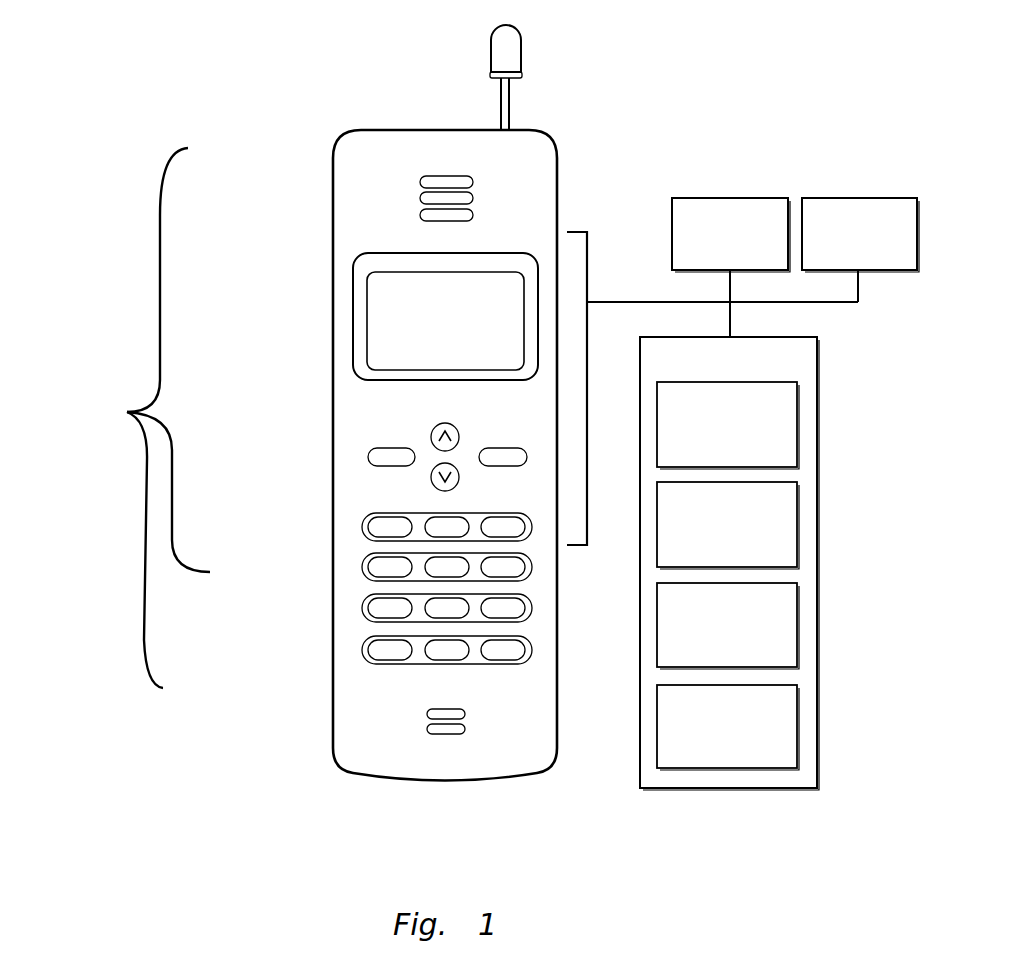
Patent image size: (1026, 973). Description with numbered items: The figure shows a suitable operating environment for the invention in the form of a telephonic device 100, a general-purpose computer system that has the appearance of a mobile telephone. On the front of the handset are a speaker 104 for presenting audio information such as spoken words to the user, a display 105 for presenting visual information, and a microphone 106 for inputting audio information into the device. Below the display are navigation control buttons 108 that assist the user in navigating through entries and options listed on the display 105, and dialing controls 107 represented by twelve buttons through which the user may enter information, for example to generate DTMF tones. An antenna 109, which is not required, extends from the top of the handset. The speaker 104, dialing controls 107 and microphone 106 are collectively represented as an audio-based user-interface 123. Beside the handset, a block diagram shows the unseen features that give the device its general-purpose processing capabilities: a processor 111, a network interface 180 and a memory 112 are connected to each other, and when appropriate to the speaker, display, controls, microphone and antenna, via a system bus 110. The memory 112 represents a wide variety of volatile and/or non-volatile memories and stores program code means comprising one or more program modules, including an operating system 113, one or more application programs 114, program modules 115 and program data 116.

The telephonic device 100 is at (620, 105).
The speaker 104 is at (326, 197).
The display 105 is at (328, 327).
The microphone 106 is at (182, 722).
The dialing controls 107 is at (323, 665).
The navigation control buttons 108 is at (326, 448).
The antenna 109 is at (546, 88).
The system bus 110 is at (600, 302).
The processor 111 is at (718, 256).
The memory 112 is at (778, 370).
The operating system 113 is at (715, 451).
The application programs 114 is at (715, 551).
The program modules 115 is at (715, 651).
The program data 116 is at (715, 755).
The audio-based user-interface 123 is at (115, 418).
The network interface 180 is at (848, 265).